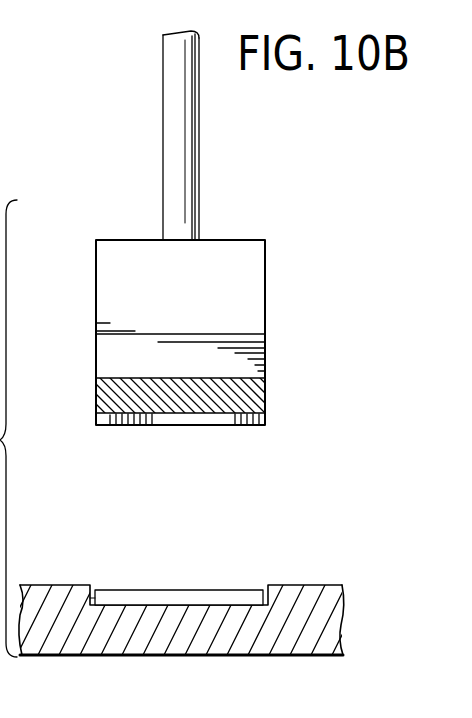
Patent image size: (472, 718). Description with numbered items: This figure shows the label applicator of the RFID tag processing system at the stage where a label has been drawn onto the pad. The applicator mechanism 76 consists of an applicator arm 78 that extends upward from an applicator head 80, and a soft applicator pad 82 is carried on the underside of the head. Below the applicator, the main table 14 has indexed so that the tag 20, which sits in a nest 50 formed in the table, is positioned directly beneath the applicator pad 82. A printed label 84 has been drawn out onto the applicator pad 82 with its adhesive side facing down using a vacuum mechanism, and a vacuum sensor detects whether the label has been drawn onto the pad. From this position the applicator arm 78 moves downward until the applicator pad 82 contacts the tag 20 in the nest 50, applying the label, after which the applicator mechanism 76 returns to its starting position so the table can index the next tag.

The main table 14 is at (317, 585).
The tag 20 is at (225, 588).
The nest 50 is at (91, 600).
The applicator mechanism 76 is at (283, 252).
The applicator arm 78 is at (181, 94).
The applicator head 80 is at (266, 309).
The applicator pad 82 is at (264, 397).
The printed label 84 is at (258, 426).